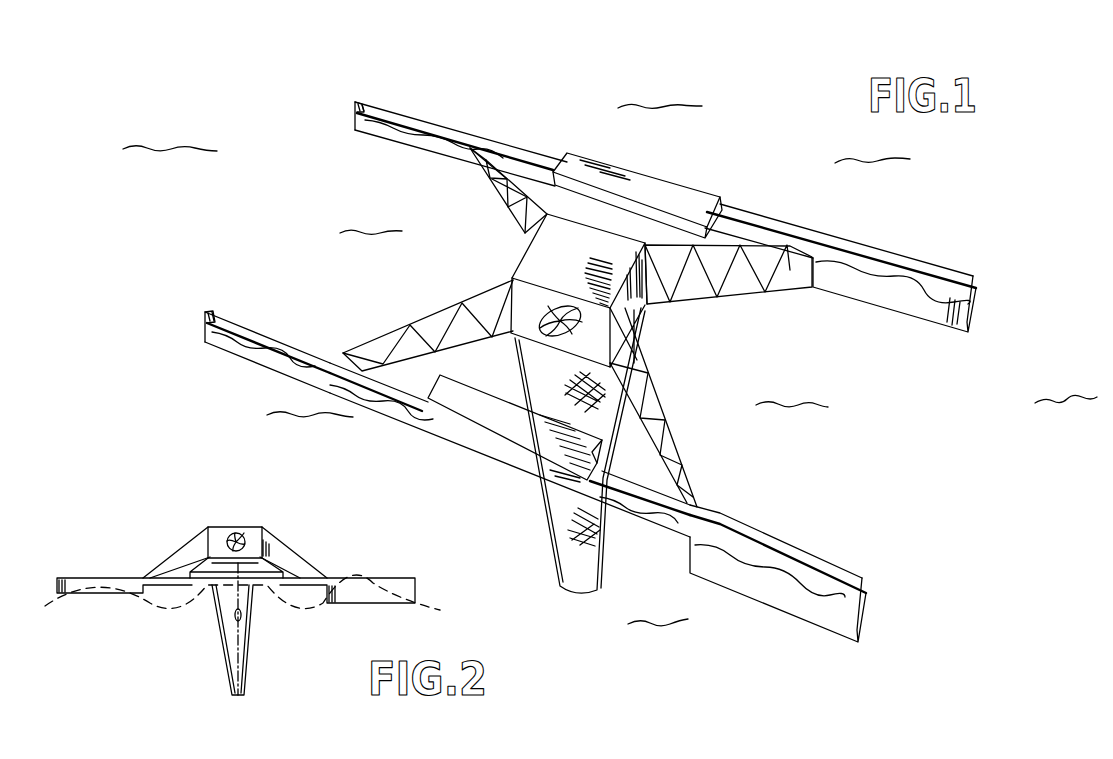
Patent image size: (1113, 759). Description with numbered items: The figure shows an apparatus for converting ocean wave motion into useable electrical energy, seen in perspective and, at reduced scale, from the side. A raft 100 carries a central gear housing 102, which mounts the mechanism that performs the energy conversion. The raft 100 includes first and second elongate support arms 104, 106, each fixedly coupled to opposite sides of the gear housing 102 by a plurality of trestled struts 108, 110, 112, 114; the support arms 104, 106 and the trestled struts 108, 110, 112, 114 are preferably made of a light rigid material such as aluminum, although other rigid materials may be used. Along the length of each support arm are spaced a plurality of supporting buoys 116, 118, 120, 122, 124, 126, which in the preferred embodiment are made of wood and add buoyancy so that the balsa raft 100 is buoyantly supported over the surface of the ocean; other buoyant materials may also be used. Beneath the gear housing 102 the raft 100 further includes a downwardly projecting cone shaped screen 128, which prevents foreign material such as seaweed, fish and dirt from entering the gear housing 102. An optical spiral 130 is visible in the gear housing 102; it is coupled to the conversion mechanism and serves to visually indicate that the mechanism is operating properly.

In FIG. 1, the raft 100 is at (519, 98).
In FIG. 1, the gear housing 102 is at (643, 308).
In FIG. 1, the first elongate support arm 104 is at (795, 228).
In FIG. 1, the second elongate support arm 106 is at (393, 408).
In FIG. 2, the second elongate support arm 106 is at (132, 577).
In FIG. 1, the trestled strut 108 is at (492, 193).
In FIG. 1, the trestled strut 110 is at (765, 292).
In FIG. 1, the trestled strut 112 is at (692, 485).
In FIG. 2, the trestled strut 112 is at (293, 552).
In FIG. 1, the trestled strut 114 is at (403, 325).
In FIG. 2, the trestled strut 114 is at (200, 535).
In FIG. 1, the supporting buoy 116 is at (390, 142).
In FIG. 1, the supporting buoy 118 is at (680, 190).
In FIG. 1, the supporting buoy 120 is at (957, 308).
In FIG. 1, the supporting buoy 122 is at (852, 630).
In FIG. 1, the supporting buoy 124 is at (532, 435).
In FIG. 1, the supporting buoy 126 is at (265, 347).
In FIG. 1, the cone shaped screen 128 is at (555, 527).
In FIG. 2, the cone shaped screen 128 is at (247, 670).
In FIG. 1, the optical spiral 130 is at (578, 336).
In FIG. 2, the optical spiral 130 is at (236, 534).